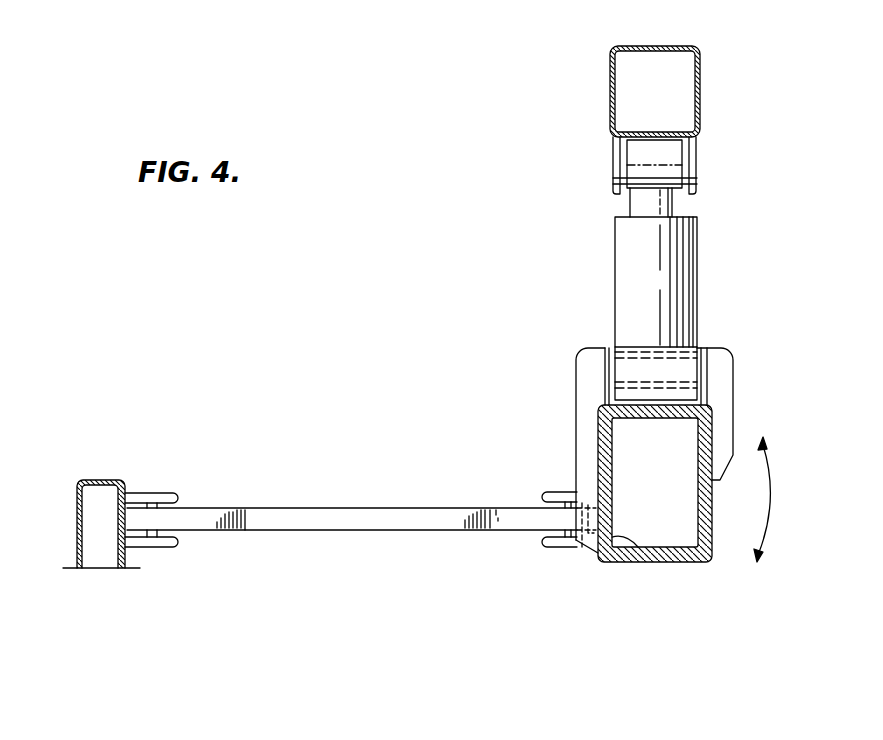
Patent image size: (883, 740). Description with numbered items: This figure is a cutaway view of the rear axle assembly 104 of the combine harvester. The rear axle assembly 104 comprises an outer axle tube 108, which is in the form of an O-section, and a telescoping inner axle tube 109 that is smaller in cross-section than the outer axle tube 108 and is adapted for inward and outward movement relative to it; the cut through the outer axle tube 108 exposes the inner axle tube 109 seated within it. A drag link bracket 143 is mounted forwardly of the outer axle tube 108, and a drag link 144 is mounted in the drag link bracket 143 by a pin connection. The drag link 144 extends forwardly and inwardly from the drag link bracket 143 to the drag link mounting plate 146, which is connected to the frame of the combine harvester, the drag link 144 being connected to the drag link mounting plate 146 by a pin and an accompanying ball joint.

The rear axle assembly 104 is at (757, 323).
The outer axle tube 108 is at (706, 562).
The inner axle tube 109 is at (645, 562).
The drag link bracket 143 is at (553, 548).
The drag link 144 is at (290, 530).
The drag link mounting plate 146 is at (164, 493).